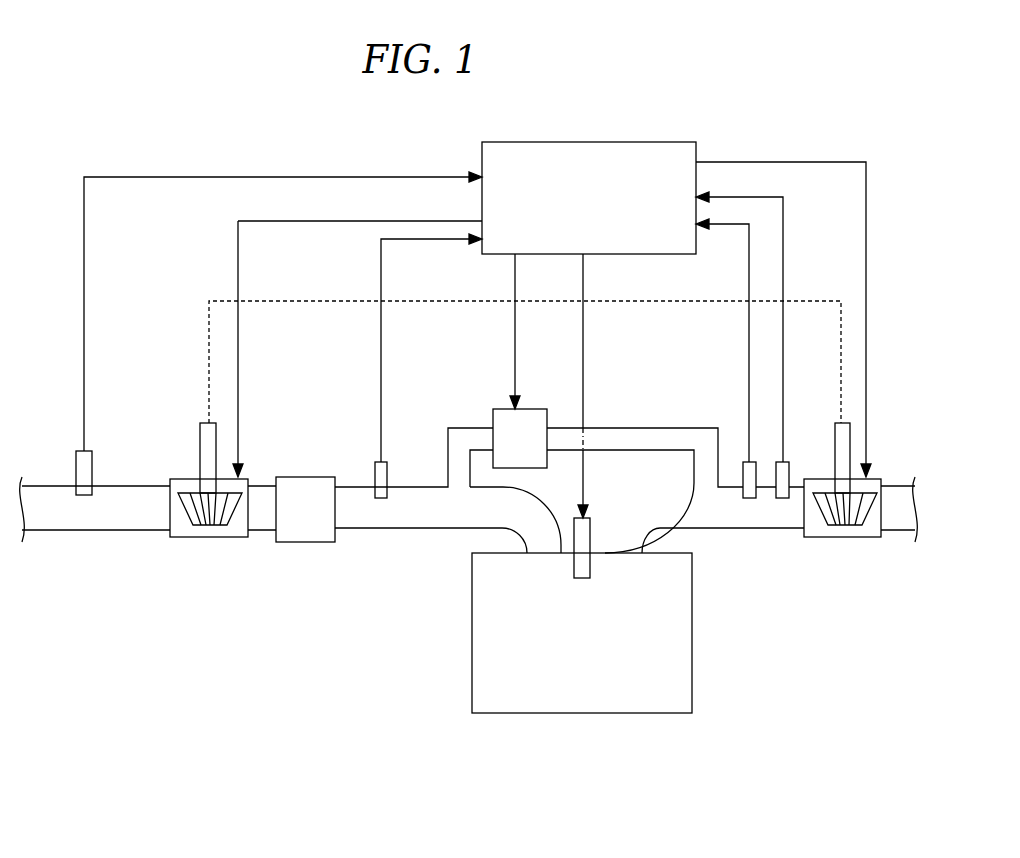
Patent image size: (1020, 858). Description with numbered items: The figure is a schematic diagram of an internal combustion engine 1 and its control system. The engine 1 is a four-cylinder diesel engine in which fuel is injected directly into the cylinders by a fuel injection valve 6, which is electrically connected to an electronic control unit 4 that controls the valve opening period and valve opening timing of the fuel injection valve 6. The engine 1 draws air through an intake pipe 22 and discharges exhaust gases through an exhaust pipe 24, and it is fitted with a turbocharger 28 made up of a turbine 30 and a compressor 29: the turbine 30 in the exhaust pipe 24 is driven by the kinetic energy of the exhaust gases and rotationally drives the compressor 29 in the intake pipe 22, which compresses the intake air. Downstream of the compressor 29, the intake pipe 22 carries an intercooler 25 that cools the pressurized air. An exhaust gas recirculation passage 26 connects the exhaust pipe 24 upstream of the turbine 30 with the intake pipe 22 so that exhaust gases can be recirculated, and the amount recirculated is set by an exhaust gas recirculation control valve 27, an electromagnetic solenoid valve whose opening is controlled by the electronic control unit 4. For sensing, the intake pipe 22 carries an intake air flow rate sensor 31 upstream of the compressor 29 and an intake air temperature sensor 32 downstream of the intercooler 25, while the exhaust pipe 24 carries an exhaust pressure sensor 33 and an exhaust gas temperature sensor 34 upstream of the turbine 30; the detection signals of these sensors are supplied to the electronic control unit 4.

The internal combustion engine 1 is at (573, 714).
The electronic control unit 4 is at (537, 142).
The fuel injection valve 6 is at (586, 516).
The intake pipe 22 is at (421, 486).
The exhaust pipe 24 is at (729, 530).
The intercooler 25 is at (305, 477).
The exhaust gas recirculation passage 26 is at (613, 428).
The exhaust gas recirculation control valve 27 is at (542, 408).
The turbocharger 28 is at (186, 452).
The compressor 29 is at (213, 538).
The turbine 30 is at (838, 538).
The intake air flow rate sensor 31 is at (80, 450).
The intake air temperature sensor 32 is at (378, 460).
The exhaust pressure sensor 33 is at (746, 460).
The exhaust gas temperature sensor 34 is at (785, 460).